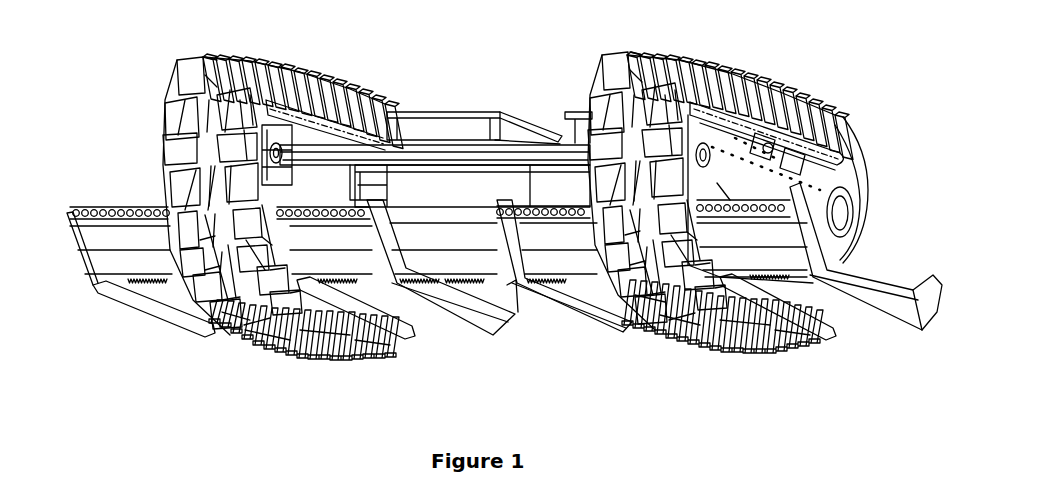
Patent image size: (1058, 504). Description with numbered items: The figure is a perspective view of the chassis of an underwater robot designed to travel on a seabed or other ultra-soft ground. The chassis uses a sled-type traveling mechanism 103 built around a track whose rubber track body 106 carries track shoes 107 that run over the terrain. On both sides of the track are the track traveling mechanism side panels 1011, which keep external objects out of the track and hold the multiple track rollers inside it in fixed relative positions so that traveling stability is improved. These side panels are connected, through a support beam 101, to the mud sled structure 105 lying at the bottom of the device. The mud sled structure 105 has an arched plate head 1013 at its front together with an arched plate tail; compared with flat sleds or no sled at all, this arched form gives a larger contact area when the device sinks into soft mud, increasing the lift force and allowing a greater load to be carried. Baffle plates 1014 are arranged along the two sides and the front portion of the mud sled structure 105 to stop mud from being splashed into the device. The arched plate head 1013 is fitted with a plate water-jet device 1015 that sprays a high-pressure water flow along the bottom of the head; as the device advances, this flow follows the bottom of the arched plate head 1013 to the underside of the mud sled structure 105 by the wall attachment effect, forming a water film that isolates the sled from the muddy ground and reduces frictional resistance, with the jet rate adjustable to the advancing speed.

The support beam 101 is at (562, 134).
The traveling mechanism 103 is at (902, 93).
The mud sled structure 105 is at (67, 222).
The rubber track body 106 is at (838, 124).
The track shoe 107 is at (818, 88).
The track traveling mechanism side panel 1011 is at (838, 180).
The arched plate head 1013 is at (70, 300).
The baffle plate 1014 is at (433, 287).
The plate water-jet device 1015 is at (110, 207).